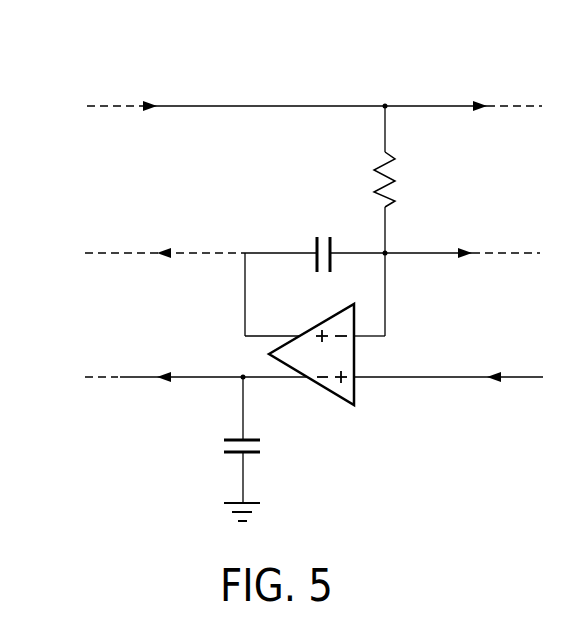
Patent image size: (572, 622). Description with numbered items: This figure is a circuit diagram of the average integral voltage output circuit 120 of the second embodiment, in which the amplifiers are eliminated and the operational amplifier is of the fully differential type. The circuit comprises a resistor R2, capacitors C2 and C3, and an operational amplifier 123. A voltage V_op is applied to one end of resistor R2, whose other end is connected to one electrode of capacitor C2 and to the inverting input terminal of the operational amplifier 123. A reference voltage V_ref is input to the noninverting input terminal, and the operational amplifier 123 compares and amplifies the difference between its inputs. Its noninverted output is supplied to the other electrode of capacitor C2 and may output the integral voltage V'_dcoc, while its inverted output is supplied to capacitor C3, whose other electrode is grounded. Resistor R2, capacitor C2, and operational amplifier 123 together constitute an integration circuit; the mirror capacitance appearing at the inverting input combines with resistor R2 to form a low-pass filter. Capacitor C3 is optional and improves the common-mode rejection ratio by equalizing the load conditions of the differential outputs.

The average integral voltage output circuit 120 is at (60, 80).
The operational amplifier 123 is at (356, 353).
The resistor R2 is at (401, 179).
The capacitor C2 is at (323, 238).
The capacitor C3 is at (258, 449).